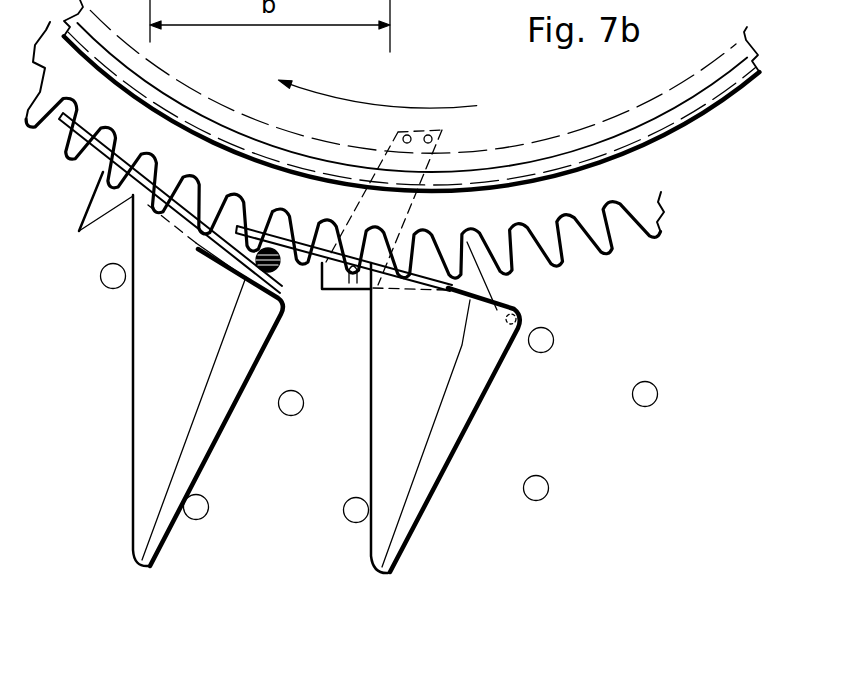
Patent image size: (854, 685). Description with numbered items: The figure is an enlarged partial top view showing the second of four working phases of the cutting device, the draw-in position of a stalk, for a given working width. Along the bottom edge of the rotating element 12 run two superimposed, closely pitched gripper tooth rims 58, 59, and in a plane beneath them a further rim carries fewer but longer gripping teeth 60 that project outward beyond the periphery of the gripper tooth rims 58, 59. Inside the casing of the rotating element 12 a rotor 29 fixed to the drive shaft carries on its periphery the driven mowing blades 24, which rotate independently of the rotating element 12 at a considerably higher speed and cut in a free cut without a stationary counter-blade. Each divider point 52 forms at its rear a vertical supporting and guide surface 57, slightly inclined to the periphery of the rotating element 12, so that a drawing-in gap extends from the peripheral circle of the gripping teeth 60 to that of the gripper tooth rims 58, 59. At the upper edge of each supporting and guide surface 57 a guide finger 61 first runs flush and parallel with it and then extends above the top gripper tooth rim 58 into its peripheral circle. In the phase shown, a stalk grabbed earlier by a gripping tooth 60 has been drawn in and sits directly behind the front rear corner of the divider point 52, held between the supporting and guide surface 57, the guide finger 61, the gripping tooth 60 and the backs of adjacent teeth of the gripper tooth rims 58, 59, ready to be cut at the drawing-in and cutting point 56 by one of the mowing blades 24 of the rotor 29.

The rotating element 12 is at (708, 113).
The mowing blades 24 is at (446, 134).
The rotor 29 is at (558, 139).
The divider point 52 is at (157, 415).
The drawing-in and cutting point 56 is at (272, 293).
The supporting and guide surface 57 is at (186, 239).
The gripper tooth rim 58 is at (604, 253).
The gripper tooth rim 59 is at (345, 127).
The gripping tooth 60 is at (296, 296).
The guide finger 61 is at (124, 200).